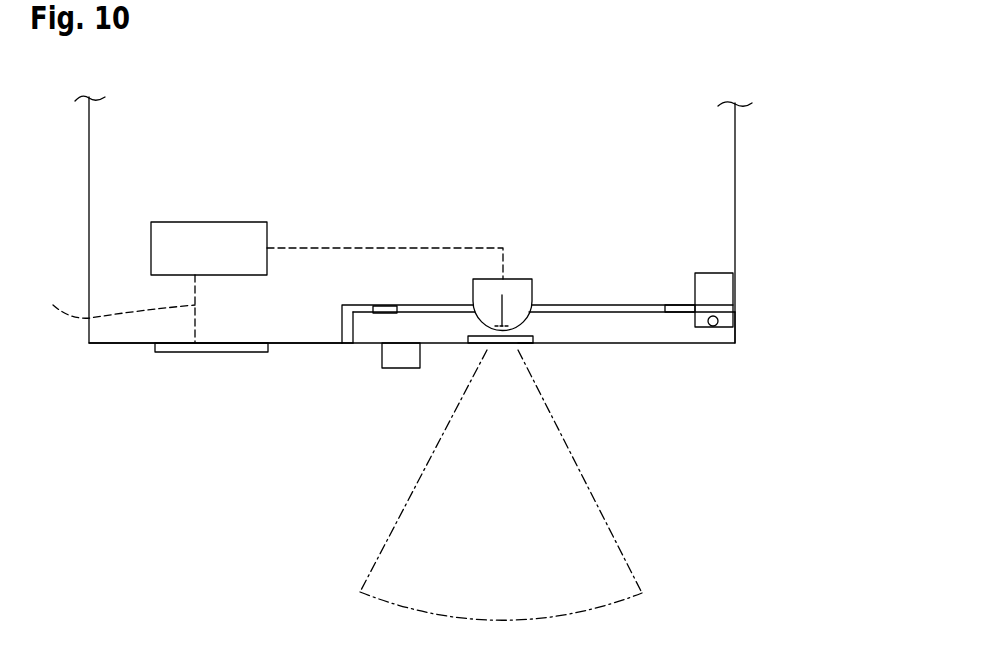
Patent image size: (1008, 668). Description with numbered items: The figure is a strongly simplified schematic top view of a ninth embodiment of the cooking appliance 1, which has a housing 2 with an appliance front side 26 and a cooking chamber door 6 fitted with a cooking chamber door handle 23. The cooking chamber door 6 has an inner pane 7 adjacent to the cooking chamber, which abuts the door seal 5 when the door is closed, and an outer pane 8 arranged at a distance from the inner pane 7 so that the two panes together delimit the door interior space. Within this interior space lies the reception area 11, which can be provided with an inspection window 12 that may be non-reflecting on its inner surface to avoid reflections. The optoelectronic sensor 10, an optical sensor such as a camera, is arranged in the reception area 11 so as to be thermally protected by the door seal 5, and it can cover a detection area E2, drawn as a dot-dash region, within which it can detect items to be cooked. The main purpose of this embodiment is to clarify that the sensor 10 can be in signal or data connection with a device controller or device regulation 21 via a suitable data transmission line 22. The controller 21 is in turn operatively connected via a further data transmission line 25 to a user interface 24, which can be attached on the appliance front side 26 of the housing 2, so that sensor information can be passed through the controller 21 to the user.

The cooking appliance 1 is at (825, 197).
The housing 2 is at (740, 133).
The door seal 5 is at (380, 307).
The cooking chamber door 6 is at (643, 345).
The inner pane 7 is at (637, 305).
The outer pane 8 is at (365, 347).
The optoelectronic sensor 10 is at (504, 295).
The reception area 11 is at (493, 347).
The inspection window 12 is at (527, 347).
The device controller 21 is at (203, 221).
The data transmission line 22 is at (368, 248).
The cooking chamber door handle 23 is at (395, 362).
The user interface 24 is at (200, 352).
The data transmission line 25 is at (108, 306).
The appliance front side 26 is at (128, 346).
The detection area E2 is at (580, 610).